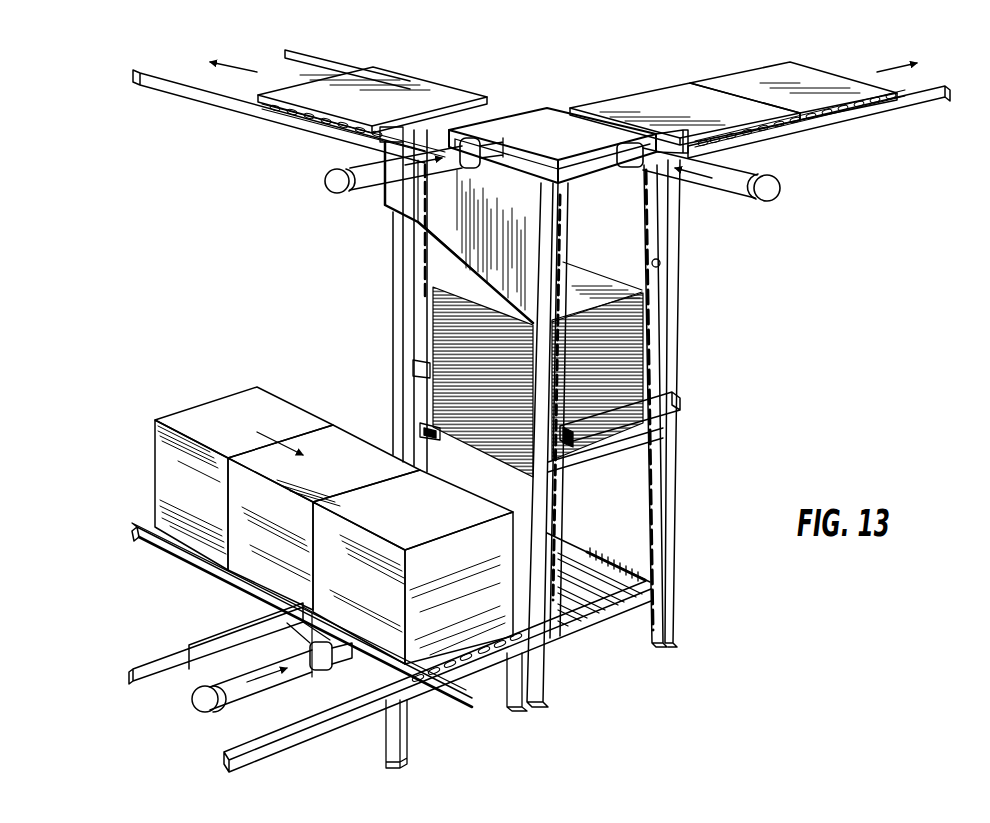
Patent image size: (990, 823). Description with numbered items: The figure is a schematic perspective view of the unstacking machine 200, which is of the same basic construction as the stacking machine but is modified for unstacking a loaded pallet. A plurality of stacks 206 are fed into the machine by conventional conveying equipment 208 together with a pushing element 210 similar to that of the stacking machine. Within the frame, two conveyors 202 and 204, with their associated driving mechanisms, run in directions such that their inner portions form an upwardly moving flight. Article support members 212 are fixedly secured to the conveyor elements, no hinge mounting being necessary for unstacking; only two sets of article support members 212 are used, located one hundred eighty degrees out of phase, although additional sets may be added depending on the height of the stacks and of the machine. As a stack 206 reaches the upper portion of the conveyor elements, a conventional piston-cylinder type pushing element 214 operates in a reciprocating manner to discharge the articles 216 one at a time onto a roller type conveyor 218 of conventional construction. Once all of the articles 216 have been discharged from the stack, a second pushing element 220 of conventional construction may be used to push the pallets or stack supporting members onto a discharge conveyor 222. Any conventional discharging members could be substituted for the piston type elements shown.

The unstacking machine 200 is at (456, 440).
The conveyor 202 is at (425, 280).
The conveyor 204 is at (662, 265).
The stack 206 is at (588, 282).
The conveying equipment 208 is at (183, 560).
The pusher cylinder 210 is at (272, 687).
The article support member 212 is at (430, 363).
The pushing element 214 is at (327, 173).
The article 216 is at (645, 95).
The roller type conveyor 218 is at (830, 118).
The second pushing element 220 is at (772, 187).
The discharge conveyor 222 is at (213, 100).